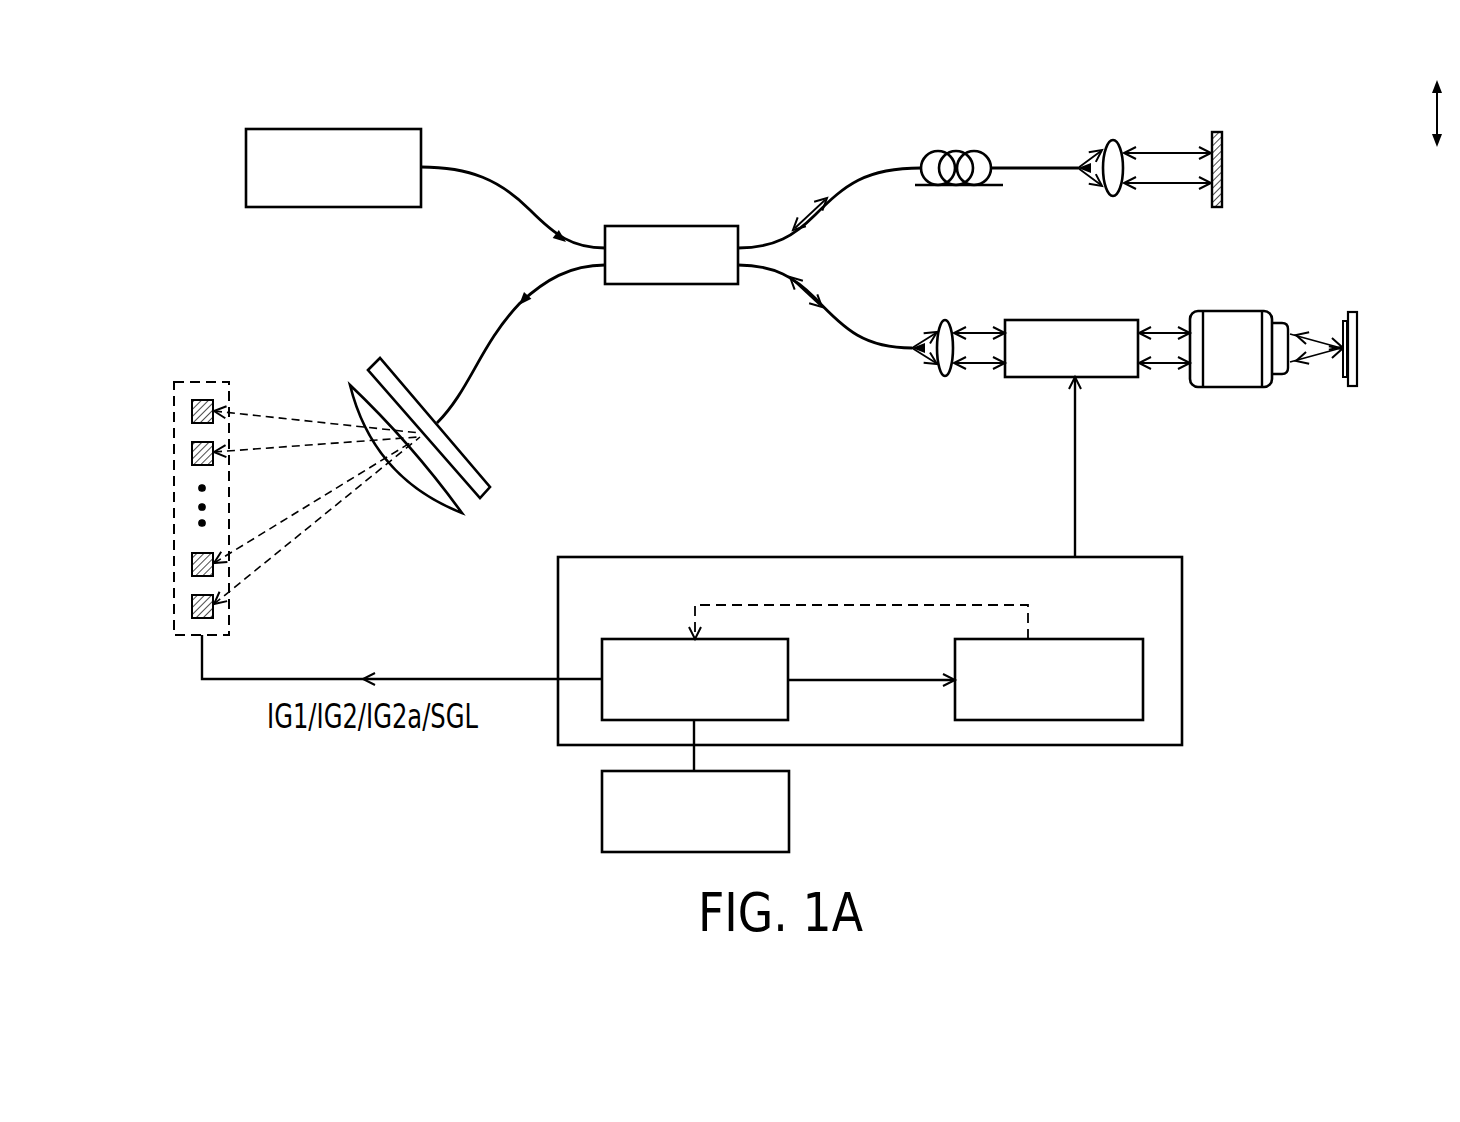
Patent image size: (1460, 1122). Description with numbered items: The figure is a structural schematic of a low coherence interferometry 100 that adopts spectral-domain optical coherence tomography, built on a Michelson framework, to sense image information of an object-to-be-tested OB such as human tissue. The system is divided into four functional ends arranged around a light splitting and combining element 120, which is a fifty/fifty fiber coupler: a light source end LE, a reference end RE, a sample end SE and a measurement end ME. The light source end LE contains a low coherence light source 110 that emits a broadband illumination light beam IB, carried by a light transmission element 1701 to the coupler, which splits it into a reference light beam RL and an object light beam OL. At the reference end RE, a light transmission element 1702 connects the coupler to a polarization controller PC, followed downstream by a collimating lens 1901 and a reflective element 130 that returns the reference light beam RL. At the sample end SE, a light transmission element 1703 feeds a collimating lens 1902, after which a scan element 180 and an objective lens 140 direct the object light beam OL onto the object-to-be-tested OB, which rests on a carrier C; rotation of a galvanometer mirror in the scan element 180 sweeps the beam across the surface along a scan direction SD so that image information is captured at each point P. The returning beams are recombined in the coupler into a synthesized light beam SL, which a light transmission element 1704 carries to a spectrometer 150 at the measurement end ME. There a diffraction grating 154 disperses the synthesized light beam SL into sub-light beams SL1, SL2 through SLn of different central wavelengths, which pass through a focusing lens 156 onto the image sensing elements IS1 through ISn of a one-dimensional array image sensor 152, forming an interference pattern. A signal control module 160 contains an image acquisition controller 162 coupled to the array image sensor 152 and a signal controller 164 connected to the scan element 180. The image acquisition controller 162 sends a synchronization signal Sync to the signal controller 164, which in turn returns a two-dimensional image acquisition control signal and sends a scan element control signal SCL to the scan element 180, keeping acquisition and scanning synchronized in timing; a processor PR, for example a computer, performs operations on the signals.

The low coherence interferometry 100 is at (1417, 862).
The low coherence light source 110 is at (356, 183).
The light splitting and combining element 120 is at (692, 269).
The reflective element 130 is at (1223, 146).
The objective lens 140 is at (1252, 363).
The spectrometer 150 is at (362, 469).
The 1D array image sensor 152 is at (182, 469).
The diffraction grating 154 is at (476, 472).
The focusing lens 156 is at (433, 490).
The signal control module 160 is at (832, 557).
The image acquisition controller 162 is at (716, 697).
The signal controller 164 is at (1071, 697).
The scan element 180 is at (1093, 364).
The light transmission element 1701 is at (475, 170).
The light transmission element 1702 is at (867, 170).
The light transmission element 1703 is at (867, 347).
The light transmission element 1704 is at (487, 366).
The collimating lens 1901 is at (1112, 140).
The collimating lens 1902 is at (944, 320).
The polarization controller PC is at (959, 189).
The processor PR is at (712, 827).
The light source end LE is at (233, 105).
The measurement end ME is at (162, 288).
The reference end RE is at (1235, 103).
The sample end SE is at (1338, 422).
The scan direction SD is at (1438, 94).
The illumination light beam IB is at (560, 218).
The reference light beam RL is at (803, 207).
The object light beam OL is at (803, 306).
The synthesized light beam SL is at (499, 289).
The sub-light beam SL1 is at (270, 415).
The sub-light beam SL2 is at (315, 440).
The sub-light beam SLn is at (320, 517).
The image sensing element IS1 is at (192, 408).
The image sensing element ISn is at (192, 604).
The object-to-be-tested OB is at (1344, 320).
The carrier C is at (1358, 323).
The point P is at (1342, 356).
The scan element control signal SCL is at (1092, 467).
The synchronization signal Sync is at (871, 663).